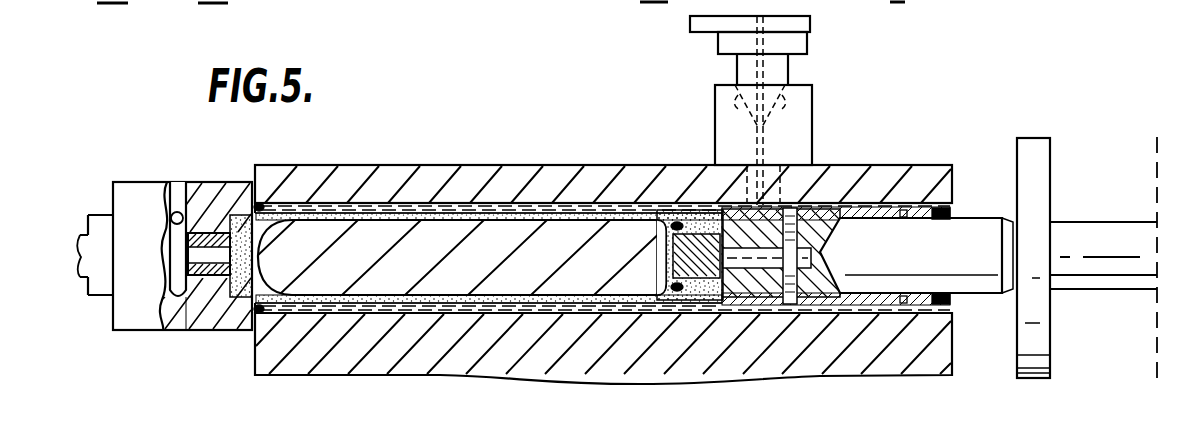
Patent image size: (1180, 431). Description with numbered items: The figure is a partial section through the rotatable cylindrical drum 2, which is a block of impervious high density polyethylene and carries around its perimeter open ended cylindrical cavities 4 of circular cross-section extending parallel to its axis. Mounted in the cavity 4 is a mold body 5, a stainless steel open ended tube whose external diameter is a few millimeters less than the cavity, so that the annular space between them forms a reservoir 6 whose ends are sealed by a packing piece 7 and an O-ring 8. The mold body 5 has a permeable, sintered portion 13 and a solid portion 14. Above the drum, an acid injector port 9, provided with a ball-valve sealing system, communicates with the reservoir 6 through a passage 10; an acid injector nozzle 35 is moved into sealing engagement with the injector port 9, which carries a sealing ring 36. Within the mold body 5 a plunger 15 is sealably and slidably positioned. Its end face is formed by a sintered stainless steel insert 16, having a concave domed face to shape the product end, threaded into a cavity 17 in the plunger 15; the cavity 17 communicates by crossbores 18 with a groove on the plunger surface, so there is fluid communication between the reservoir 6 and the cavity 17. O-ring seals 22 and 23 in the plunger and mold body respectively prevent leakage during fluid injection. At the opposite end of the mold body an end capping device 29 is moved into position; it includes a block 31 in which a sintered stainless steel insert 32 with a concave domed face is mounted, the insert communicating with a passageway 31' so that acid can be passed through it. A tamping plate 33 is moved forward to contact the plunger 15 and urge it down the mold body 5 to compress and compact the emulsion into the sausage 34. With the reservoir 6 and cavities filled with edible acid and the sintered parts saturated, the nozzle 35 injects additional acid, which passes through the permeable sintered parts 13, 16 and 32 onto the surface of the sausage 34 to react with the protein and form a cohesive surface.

The cylindrical drum 2 is at (482, 170).
The cavity 4 is at (868, 200).
The mold body 5 is at (652, 311).
The reservoir 6 is at (357, 207).
The packing piece 7 is at (266, 203).
The O-ring 8 is at (953, 323).
The acid injector port 9 is at (812, 137).
The passage 10 is at (755, 185).
The permeable sintered portion 13 is at (563, 217).
The solid portion 14 is at (830, 300).
The plunger 15 is at (966, 219).
The sintered stainless steel insert 16 is at (694, 255).
The cavity 17 is at (760, 262).
The crossbores 18 is at (800, 235).
The O-ring seal 22 is at (678, 288).
The O-ring seal 23 is at (897, 303).
The end capping device 29 is at (146, 187).
The block 31 is at (176, 336).
The passageway 31' is at (148, 279).
The sintered stainless steel insert 32 is at (240, 282).
The tamping plate 33 is at (1038, 180).
The sausage 34 is at (477, 250).
The acid injector nozzle 35 is at (806, 43).
The sealing ring 36 is at (790, 107).